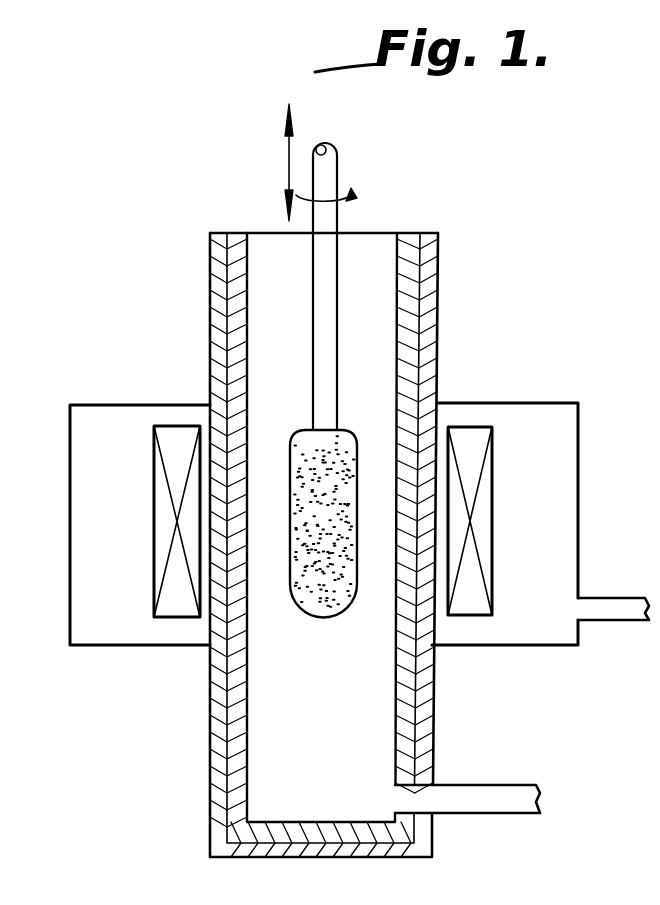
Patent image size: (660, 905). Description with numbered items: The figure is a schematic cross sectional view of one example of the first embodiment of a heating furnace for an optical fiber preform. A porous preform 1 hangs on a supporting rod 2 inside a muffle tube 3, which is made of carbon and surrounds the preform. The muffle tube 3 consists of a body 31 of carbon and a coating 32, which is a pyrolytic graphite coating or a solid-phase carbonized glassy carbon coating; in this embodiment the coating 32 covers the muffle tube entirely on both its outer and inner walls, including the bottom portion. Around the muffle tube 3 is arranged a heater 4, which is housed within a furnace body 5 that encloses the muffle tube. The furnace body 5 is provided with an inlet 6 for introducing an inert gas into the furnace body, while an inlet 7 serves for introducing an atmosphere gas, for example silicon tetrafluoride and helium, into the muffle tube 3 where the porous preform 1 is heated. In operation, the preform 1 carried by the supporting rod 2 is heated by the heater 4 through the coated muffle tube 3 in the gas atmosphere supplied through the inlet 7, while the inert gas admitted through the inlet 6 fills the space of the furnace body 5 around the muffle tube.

The porous preform 1 is at (350, 452).
The supporting rod 2 is at (326, 182).
The muffle tube 3 is at (420, 235).
The body of the carbon made muffle tube 31 is at (416, 268).
The pyrolytic graphite coating or solid-phase carbonized glassy carbon coating 32 is at (402, 243).
The heater 4 is at (160, 550).
The furnace body 5 is at (578, 403).
The inlet for introducing an inert gas 6 is at (617, 612).
The inlet for introducing an atmosphere gas 7 is at (503, 796).